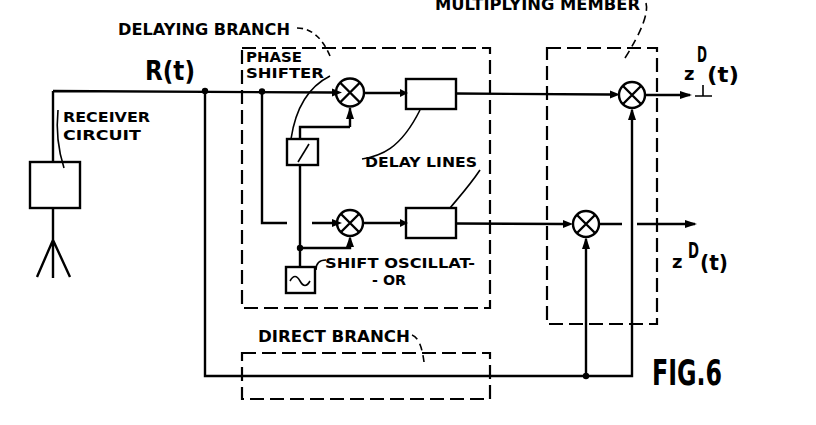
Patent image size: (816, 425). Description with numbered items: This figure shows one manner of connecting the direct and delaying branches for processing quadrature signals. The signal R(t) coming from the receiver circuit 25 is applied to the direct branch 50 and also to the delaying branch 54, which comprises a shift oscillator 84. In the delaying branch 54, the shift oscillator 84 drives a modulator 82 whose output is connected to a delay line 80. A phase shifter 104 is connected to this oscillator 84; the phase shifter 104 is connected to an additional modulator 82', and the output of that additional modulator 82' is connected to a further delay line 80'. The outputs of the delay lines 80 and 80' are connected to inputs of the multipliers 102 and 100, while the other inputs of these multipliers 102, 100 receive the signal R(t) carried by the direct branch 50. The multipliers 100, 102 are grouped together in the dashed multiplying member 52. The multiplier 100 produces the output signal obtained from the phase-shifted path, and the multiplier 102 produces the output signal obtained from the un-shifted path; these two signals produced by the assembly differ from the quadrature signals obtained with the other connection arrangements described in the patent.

The receiver circuit 25 is at (80, 190).
The direct branch 50 is at (246, 396).
The multiplying member 52 is at (617, 48).
The delaying branch 54 is at (384, 56).
The delay line 80 is at (431, 206).
The delay line 80' is at (440, 118).
The modulator 82 is at (363, 207).
The additional modulator 82' is at (368, 114).
The shift oscillator 84 is at (316, 280).
The multiplier 100 is at (618, 106).
The multiplier 102 is at (585, 211).
The phase shifter 104 is at (318, 146).